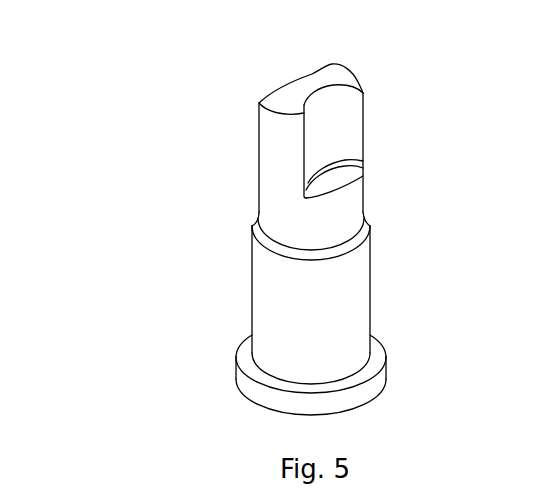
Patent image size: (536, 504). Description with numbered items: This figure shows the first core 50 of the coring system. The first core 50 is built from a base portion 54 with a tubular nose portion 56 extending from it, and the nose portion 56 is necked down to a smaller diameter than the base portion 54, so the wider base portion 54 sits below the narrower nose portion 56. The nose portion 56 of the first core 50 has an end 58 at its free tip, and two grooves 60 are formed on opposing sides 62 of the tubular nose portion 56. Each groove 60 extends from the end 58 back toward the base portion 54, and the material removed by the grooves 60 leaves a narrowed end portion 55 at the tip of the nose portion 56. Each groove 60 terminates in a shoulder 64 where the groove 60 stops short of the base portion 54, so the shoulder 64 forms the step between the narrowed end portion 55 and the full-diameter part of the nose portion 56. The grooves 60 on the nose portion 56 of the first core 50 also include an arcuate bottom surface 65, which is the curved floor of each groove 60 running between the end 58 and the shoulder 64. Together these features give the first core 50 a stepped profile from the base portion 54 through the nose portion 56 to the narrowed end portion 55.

The first core 50 is at (127, 152).
The base portion 54 is at (348, 303).
The narrowed end portion 55 is at (278, 148).
The tubular nose portion 56 is at (280, 200).
The end 58 is at (318, 80).
The groove 60 is at (298, 82).
The opposing sides 62 is at (340, 218).
The shoulder 64 is at (335, 188).
The arcuate bottom surface 65 is at (344, 130).